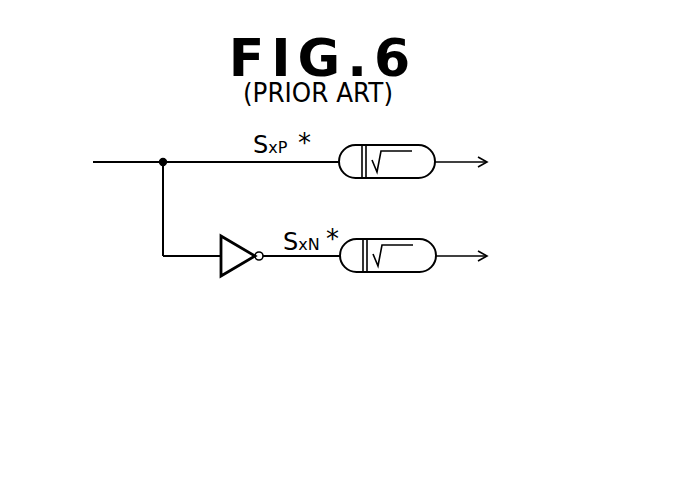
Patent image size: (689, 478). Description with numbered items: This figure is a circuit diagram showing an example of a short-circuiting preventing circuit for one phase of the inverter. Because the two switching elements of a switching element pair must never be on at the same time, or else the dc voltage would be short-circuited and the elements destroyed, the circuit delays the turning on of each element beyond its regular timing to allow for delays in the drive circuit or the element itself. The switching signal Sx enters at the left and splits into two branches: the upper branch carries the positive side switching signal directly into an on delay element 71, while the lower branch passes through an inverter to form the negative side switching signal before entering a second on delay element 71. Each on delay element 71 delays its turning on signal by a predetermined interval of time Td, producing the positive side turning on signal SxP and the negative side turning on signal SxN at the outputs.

The on delay element 71 is at (420, 178).
The switching signal Sx is at (201, 202).
The positive side turning on signal SxP is at (484, 162).
The negative side turning on signal SxN is at (485, 256).